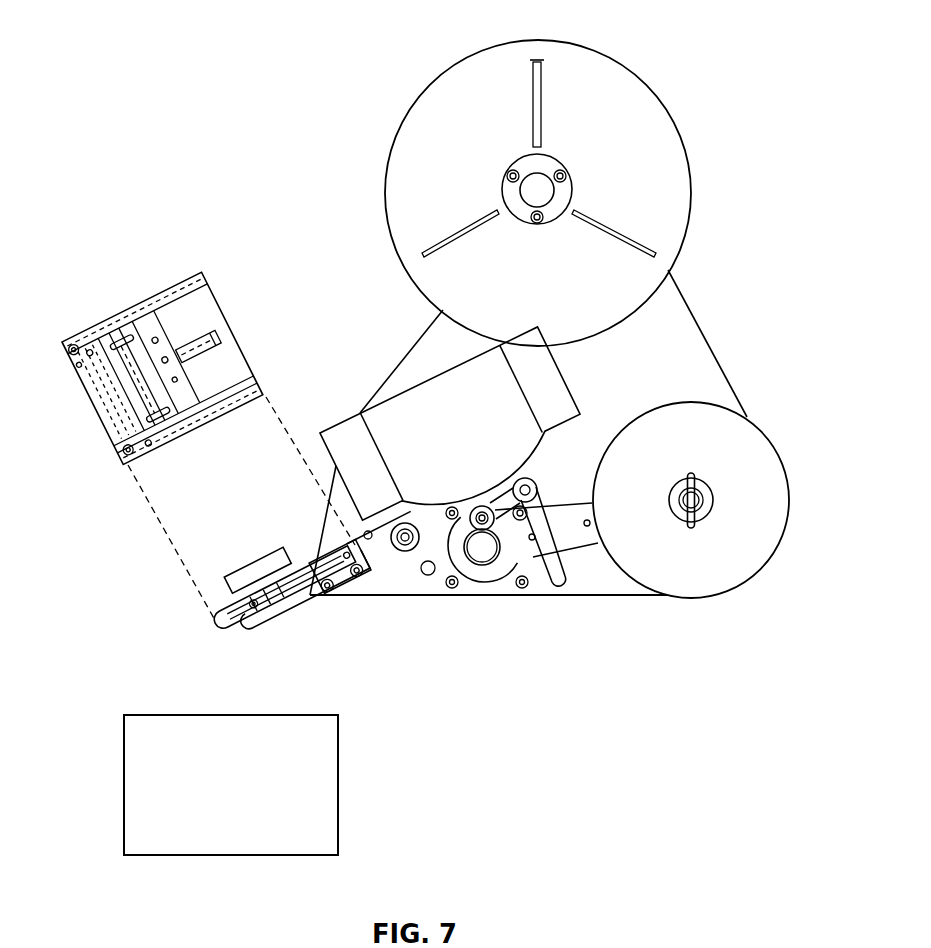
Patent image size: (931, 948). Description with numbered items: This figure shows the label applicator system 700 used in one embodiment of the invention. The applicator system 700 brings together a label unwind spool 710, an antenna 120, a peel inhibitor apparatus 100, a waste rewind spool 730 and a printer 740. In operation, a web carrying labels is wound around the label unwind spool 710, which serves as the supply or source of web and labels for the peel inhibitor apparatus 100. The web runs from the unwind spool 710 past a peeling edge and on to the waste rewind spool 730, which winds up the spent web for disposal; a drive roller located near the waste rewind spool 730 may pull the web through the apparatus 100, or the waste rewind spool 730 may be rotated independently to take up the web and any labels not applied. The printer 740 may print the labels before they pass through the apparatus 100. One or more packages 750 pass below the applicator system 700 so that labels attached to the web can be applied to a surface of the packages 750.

The label applicator system 700 is at (222, 37).
The label unwind spool 710 is at (535, 38).
The waste rewind spool 730 is at (790, 500).
The printer 740 is at (695, 317).
The peel inhibitor apparatus 100 is at (108, 315).
The antenna 120 is at (268, 555).
The package 750 is at (218, 338).